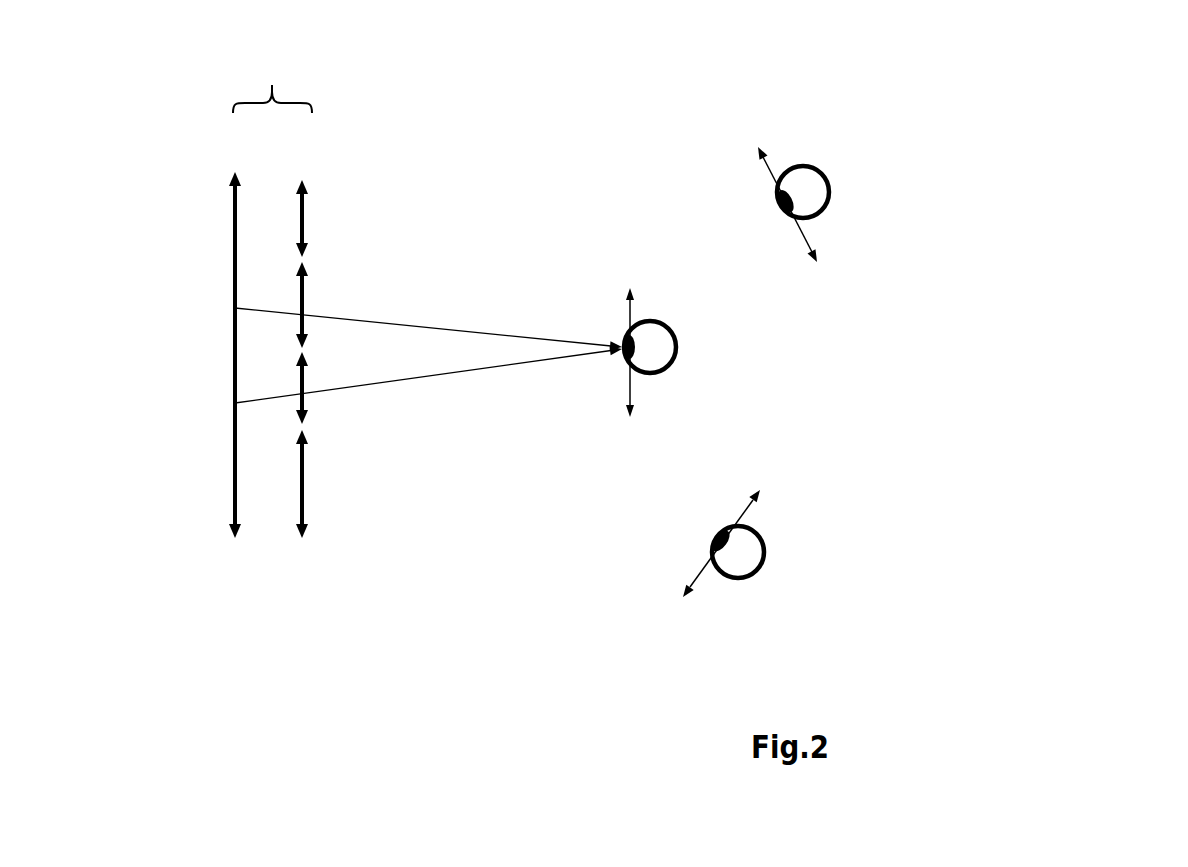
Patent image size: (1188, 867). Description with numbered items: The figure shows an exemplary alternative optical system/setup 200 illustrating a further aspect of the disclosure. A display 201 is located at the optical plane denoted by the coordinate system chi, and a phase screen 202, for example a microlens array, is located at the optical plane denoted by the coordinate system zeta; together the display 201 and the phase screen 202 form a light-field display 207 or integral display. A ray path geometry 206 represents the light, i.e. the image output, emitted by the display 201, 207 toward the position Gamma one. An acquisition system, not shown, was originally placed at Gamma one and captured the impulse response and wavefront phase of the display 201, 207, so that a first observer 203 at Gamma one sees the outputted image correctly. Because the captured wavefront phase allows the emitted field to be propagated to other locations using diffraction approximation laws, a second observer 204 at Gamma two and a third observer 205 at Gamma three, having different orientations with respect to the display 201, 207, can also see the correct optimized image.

The alternative optical system/setup 200 is at (1068, 115).
The display 201 is at (232, 238).
The phase screen 202 is at (305, 236).
The first observer 203 is at (659, 341).
The second observer 204 is at (750, 550).
The third observer 205 is at (817, 188).
The ray path geometry of light emitted by display 206 is at (412, 321).
The light-field display 207 is at (268, 110).